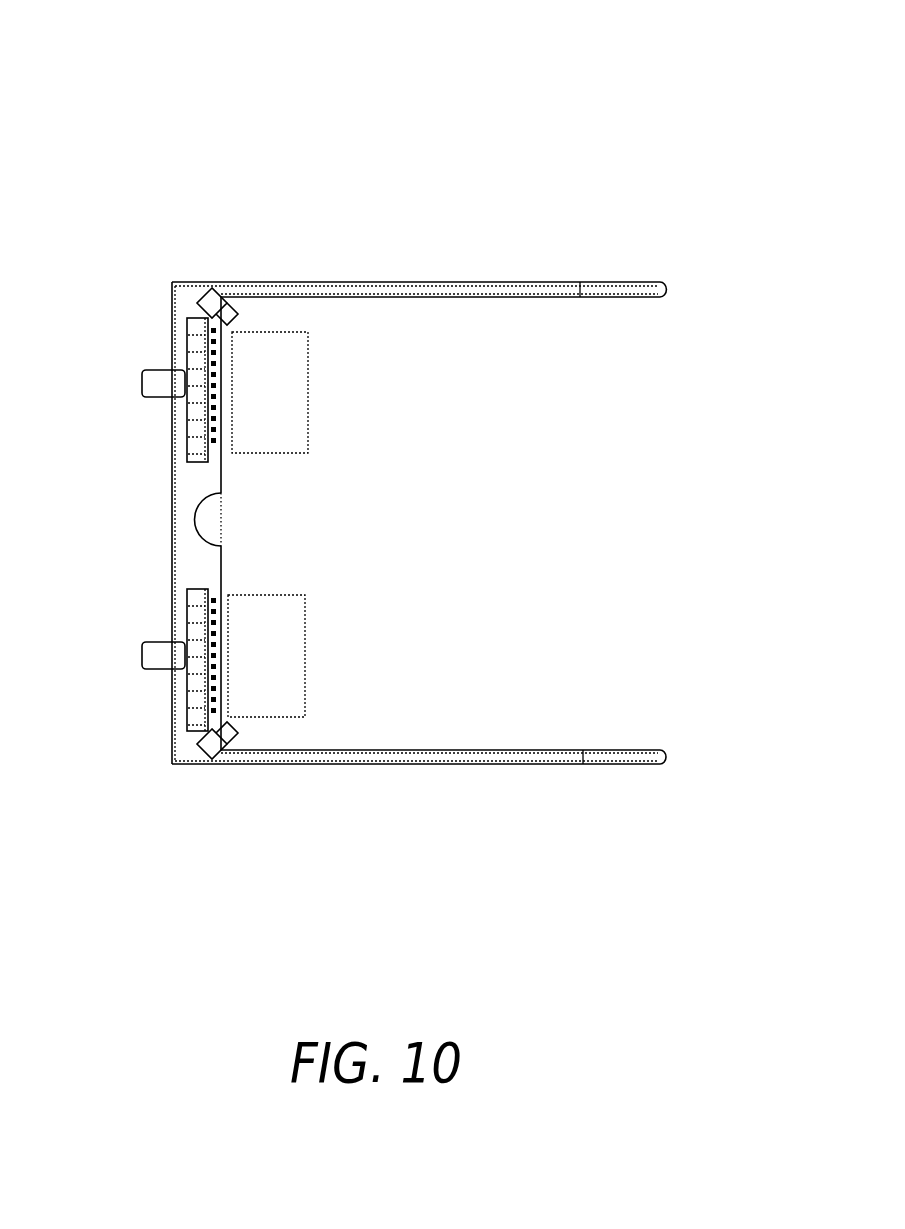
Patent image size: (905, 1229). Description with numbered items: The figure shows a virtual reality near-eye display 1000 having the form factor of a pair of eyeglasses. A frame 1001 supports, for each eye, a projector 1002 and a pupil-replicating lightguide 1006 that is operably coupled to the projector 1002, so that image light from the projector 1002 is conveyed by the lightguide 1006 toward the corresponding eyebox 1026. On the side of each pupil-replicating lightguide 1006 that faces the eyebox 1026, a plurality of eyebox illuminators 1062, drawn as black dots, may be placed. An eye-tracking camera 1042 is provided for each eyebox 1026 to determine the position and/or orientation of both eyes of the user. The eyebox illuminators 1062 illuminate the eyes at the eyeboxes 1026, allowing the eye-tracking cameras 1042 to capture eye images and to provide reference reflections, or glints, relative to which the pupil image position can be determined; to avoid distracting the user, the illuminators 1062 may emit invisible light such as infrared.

The near-eye display 1000 is at (403, 128).
The frame 1001 is at (545, 282).
The projector 1002 is at (142, 378).
The pupil-replicating lightguide 1006 is at (197, 340).
The eyebox 1026 is at (297, 402).
The eye-tracking camera 1042 is at (219, 283).
The eyebox illuminator 1062 is at (214, 446).